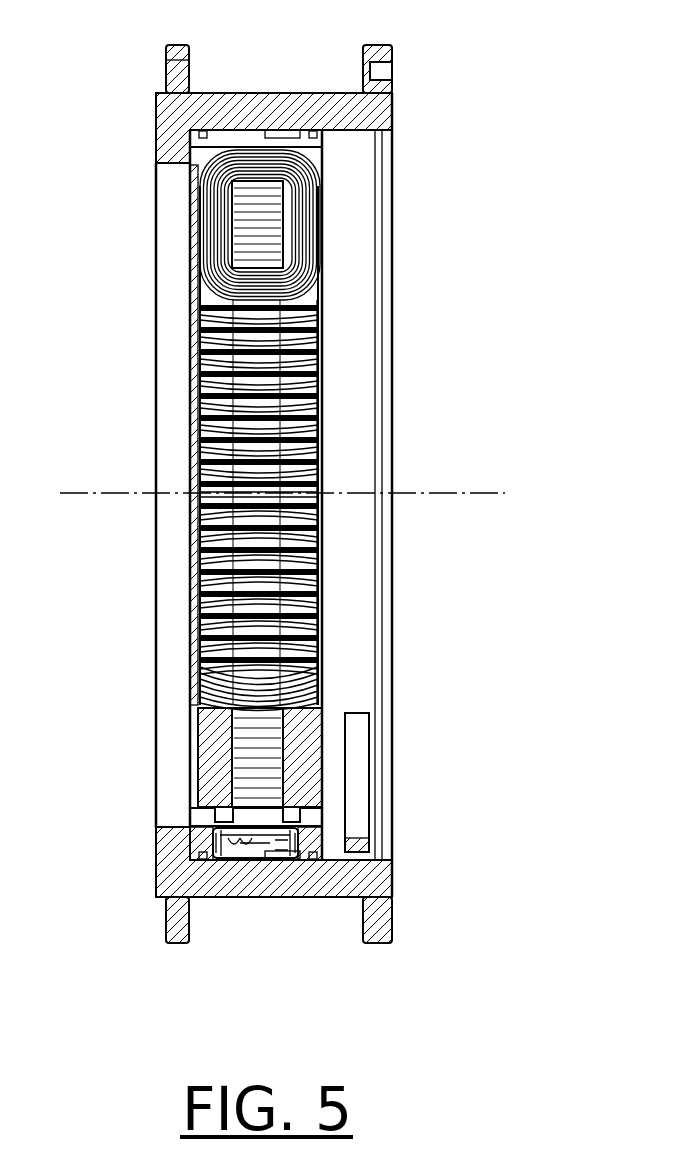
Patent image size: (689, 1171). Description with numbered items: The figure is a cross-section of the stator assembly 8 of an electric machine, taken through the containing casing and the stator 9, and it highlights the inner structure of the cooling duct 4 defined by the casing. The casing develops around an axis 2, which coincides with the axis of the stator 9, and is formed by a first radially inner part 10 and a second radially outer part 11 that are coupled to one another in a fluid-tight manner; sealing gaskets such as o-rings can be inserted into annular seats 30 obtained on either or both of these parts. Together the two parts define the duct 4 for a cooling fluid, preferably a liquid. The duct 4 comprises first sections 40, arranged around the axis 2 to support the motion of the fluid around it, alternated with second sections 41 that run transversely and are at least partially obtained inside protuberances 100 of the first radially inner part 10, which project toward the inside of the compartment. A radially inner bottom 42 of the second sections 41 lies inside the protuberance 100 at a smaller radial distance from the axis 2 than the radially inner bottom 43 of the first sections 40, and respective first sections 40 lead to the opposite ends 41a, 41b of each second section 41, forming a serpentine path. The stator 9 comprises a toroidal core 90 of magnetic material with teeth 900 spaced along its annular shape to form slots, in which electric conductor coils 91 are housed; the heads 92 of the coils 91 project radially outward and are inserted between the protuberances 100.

The axis 2 is at (435, 493).
The duct 4 is at (276, 130).
The stator assembly 8 is at (471, 252).
The stator 9 is at (340, 437).
The first radially inner part 10 is at (200, 160).
The second radially outer part 11 is at (237, 100).
The annular seats 30 is at (200, 130).
The first sections 40 is at (290, 127).
The second sections 41 is at (243, 848).
The end of second section 41a is at (300, 850).
The end of second section 41b is at (220, 842).
The radially inner bottom of second duct sections 42 is at (247, 850).
The radially inner bottom of first duct sections 43 is at (328, 140).
The toroidal core 90 is at (256, 239).
The electric conductor coils 91 is at (210, 390).
The heads 92 is at (245, 160).
The protuberances 100 is at (324, 152).
The teeth 900 is at (210, 738).